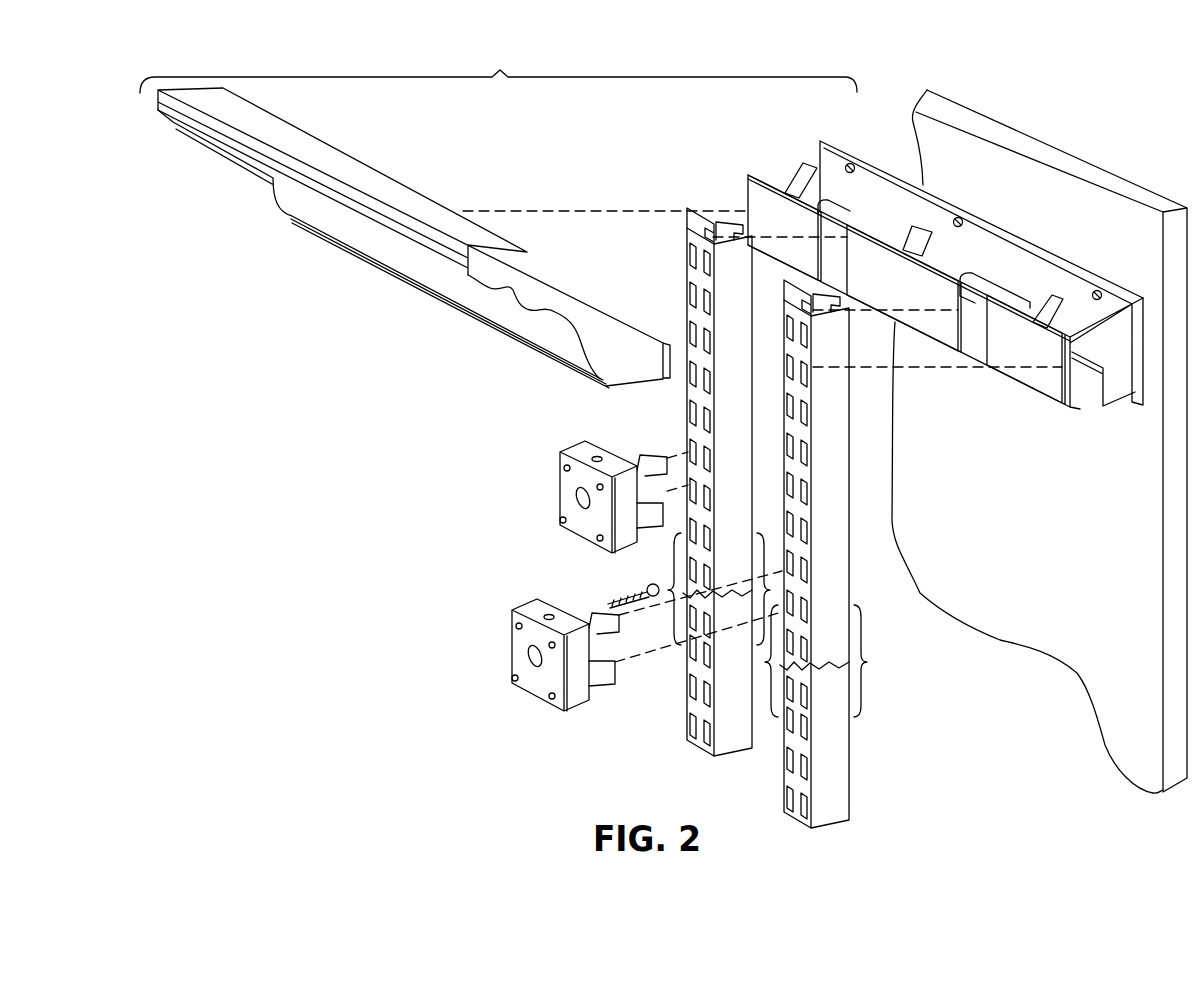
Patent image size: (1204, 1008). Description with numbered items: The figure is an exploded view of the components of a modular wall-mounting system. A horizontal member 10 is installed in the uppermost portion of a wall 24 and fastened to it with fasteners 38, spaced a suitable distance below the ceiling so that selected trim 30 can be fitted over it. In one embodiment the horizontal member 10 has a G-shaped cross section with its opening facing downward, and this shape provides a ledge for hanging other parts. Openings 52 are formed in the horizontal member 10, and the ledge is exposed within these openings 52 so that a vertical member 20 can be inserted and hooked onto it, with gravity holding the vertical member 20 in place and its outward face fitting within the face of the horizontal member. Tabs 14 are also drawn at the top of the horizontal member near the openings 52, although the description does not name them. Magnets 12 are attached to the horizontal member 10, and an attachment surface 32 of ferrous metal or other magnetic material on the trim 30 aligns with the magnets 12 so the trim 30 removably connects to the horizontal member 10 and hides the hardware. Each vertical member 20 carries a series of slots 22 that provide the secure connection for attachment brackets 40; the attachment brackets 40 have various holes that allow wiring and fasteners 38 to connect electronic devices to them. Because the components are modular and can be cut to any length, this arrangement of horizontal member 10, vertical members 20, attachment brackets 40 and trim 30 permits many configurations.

The horizontal member 10 is at (968, 246).
The magnet 12 is at (790, 247).
The hook tab 14 is at (800, 180).
The vertical member 20 is at (727, 480).
The slot 22 is at (693, 412).
The wall 24 is at (1090, 167).
The trim 30 is at (548, 335).
The attachment surface 32 is at (676, 350).
The fastener 38 is at (1097, 290).
The attachment bracket 40 is at (567, 498).
The opening 52 is at (847, 217).